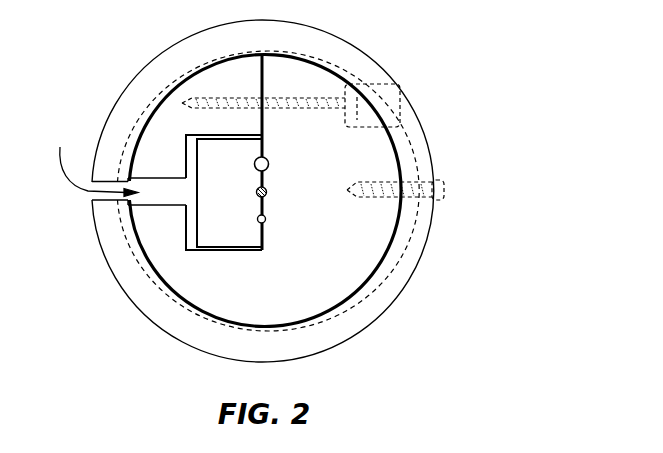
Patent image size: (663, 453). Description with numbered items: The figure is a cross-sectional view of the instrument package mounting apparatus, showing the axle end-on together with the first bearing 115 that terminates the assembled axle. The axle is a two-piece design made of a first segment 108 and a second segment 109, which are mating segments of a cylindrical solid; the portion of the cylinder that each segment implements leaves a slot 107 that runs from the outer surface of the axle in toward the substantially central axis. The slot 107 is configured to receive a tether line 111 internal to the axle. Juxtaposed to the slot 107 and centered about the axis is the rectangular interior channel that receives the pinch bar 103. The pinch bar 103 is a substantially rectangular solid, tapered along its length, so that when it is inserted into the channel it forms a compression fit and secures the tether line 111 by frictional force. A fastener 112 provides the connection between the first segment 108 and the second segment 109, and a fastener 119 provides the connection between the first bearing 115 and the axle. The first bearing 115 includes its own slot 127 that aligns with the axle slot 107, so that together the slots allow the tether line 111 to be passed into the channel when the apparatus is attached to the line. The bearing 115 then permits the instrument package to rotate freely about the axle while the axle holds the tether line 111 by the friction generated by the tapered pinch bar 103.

The pinch bar 103 is at (223, 235).
The slot 107 is at (90, 160).
The first segment 108 is at (154, 135).
The second segment 109 is at (330, 273).
The tether line 111 is at (268, 190).
The fastener 112 is at (393, 127).
The first bearing 115 is at (418, 268).
The fastener 119 is at (435, 180).
The slot 127 is at (102, 199).